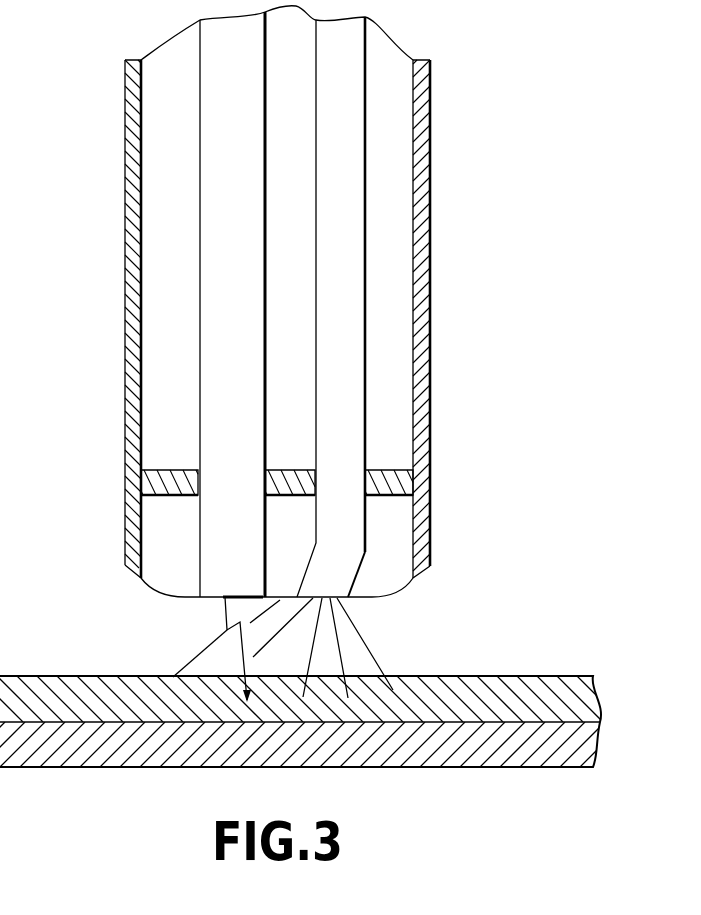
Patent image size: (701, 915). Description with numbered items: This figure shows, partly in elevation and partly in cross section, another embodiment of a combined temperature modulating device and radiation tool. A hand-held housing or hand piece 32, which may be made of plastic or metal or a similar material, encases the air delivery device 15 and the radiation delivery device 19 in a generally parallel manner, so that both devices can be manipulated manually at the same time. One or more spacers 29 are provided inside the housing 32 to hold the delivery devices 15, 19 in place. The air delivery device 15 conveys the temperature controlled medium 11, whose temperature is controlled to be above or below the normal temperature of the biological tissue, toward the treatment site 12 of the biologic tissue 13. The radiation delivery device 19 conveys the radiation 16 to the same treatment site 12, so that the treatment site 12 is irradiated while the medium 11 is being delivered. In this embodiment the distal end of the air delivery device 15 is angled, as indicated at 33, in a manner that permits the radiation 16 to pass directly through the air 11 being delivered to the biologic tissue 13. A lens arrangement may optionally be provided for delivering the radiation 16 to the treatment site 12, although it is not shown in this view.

The temperature controlled medium 11 is at (325, 660).
The treatment site 12 is at (220, 659).
The biologic tissue 13 is at (450, 752).
The delivery device 15 is at (335, 237).
The radiation 16 is at (223, 618).
The delivery device 19 is at (222, 413).
The spacers 29 is at (395, 470).
The hand-held housing 32 is at (123, 177).
The angled distal end 33 is at (388, 568).